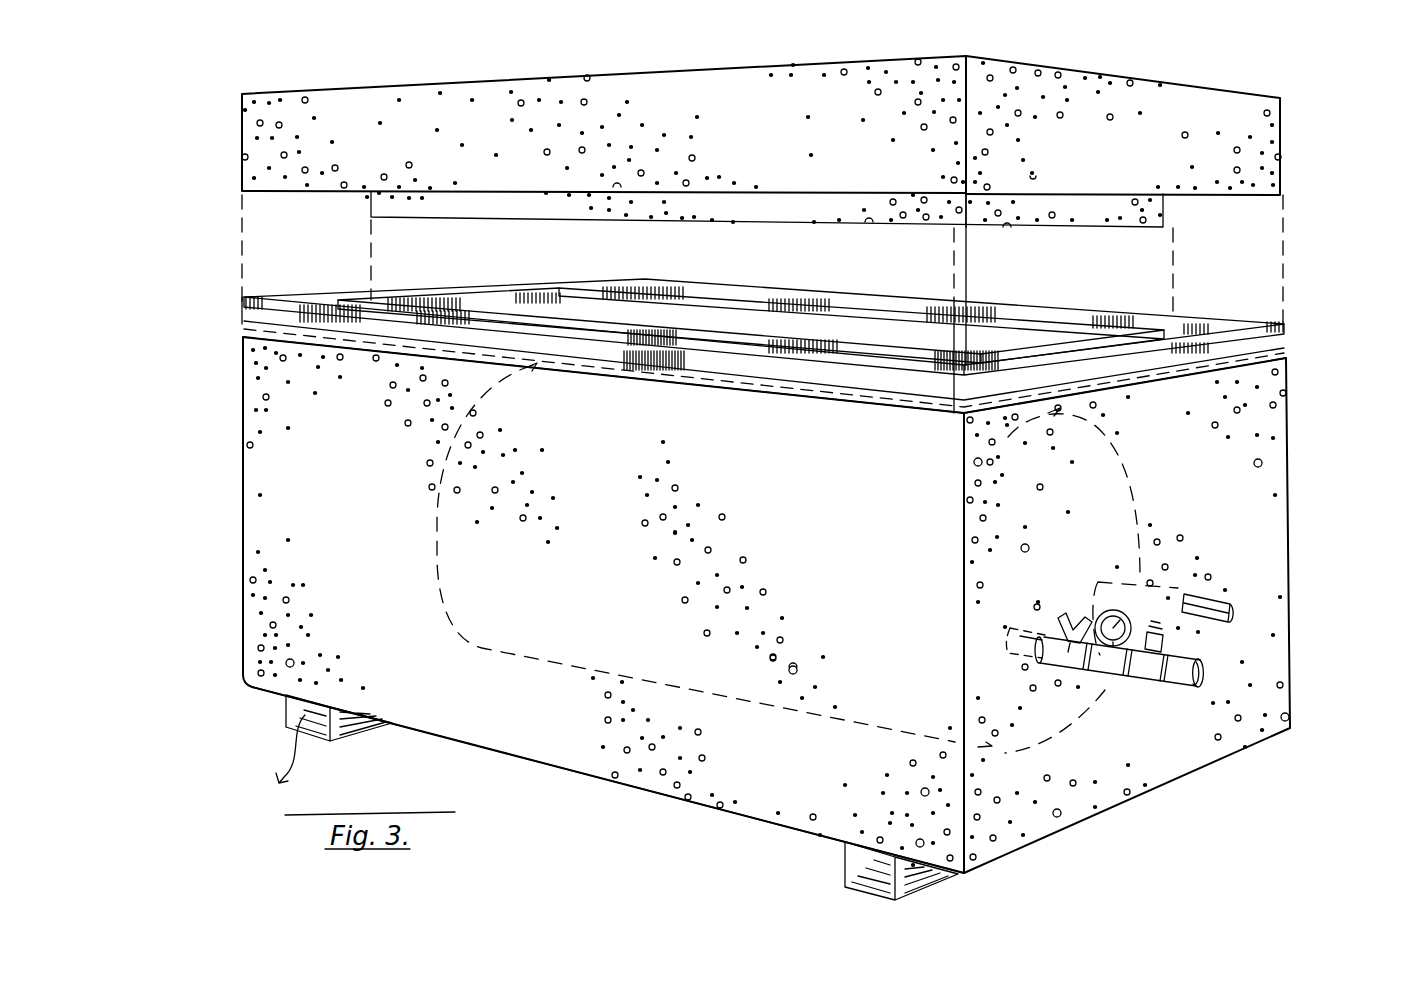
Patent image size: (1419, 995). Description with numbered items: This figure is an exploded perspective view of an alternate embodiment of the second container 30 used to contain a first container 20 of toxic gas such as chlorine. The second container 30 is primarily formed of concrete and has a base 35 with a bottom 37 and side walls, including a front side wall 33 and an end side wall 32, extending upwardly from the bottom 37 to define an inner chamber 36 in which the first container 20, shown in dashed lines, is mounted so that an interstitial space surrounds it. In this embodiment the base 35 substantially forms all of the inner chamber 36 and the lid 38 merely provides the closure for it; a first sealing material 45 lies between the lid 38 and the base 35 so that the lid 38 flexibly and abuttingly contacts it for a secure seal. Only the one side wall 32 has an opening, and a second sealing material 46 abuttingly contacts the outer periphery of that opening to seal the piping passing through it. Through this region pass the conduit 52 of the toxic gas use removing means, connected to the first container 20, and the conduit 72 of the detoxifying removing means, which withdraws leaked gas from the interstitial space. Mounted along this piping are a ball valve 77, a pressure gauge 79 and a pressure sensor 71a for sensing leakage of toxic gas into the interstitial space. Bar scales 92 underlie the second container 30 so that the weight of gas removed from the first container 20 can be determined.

The lid 38 is at (322, 94).
The first sealing material 45 is at (1188, 318).
The inner chamber 36 is at (1213, 352).
The second container 30 is at (1356, 266).
The side wall 33 is at (360, 494).
The first container 20 is at (822, 502).
The side wall 32 is at (1190, 486).
The bottom 37 is at (648, 786).
The bar scales 92 is at (330, 738).
The base 35 is at (1313, 530).
The ball valve 77 is at (1068, 667).
The pressure gauge 79 is at (1122, 668).
The pressure sensor 71a is at (1170, 644).
The conduit 72 is at (1213, 681).
The second sealing material 46 is at (1188, 596).
The conduit 52 is at (1275, 572).